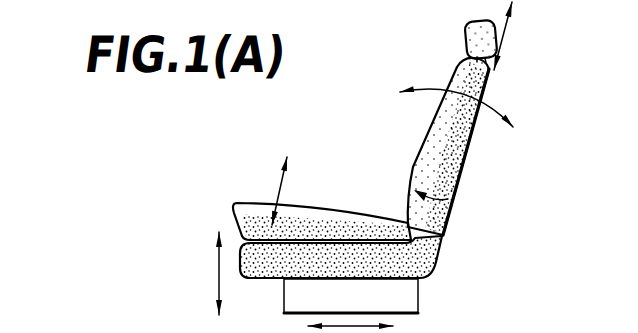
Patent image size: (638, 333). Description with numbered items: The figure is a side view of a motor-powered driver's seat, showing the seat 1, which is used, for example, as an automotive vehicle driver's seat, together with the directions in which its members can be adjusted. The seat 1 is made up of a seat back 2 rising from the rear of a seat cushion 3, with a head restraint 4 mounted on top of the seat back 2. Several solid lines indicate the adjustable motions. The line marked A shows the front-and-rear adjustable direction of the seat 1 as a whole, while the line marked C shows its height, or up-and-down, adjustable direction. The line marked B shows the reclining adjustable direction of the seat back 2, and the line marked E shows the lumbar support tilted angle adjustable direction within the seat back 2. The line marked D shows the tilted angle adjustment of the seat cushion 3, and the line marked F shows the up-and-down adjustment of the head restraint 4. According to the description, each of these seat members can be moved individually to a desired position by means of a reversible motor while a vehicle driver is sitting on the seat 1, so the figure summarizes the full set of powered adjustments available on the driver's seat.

The seat 1 is at (339, 158).
The seat back 2 is at (461, 168).
The seat cushion 3 is at (337, 206).
The head restraint 4 is at (473, 28).
The front-and-rear adjustable direction A is at (350, 328).
The reclining adjustable direction B is at (496, 108).
The height adjustable direction C is at (218, 268).
The tilted angle adjustment of the seat cushion D is at (276, 182).
The lumbar support tilted angle adjustable direction E is at (448, 199).
The up-and-down adjustment of the head restraint F is at (507, 38).